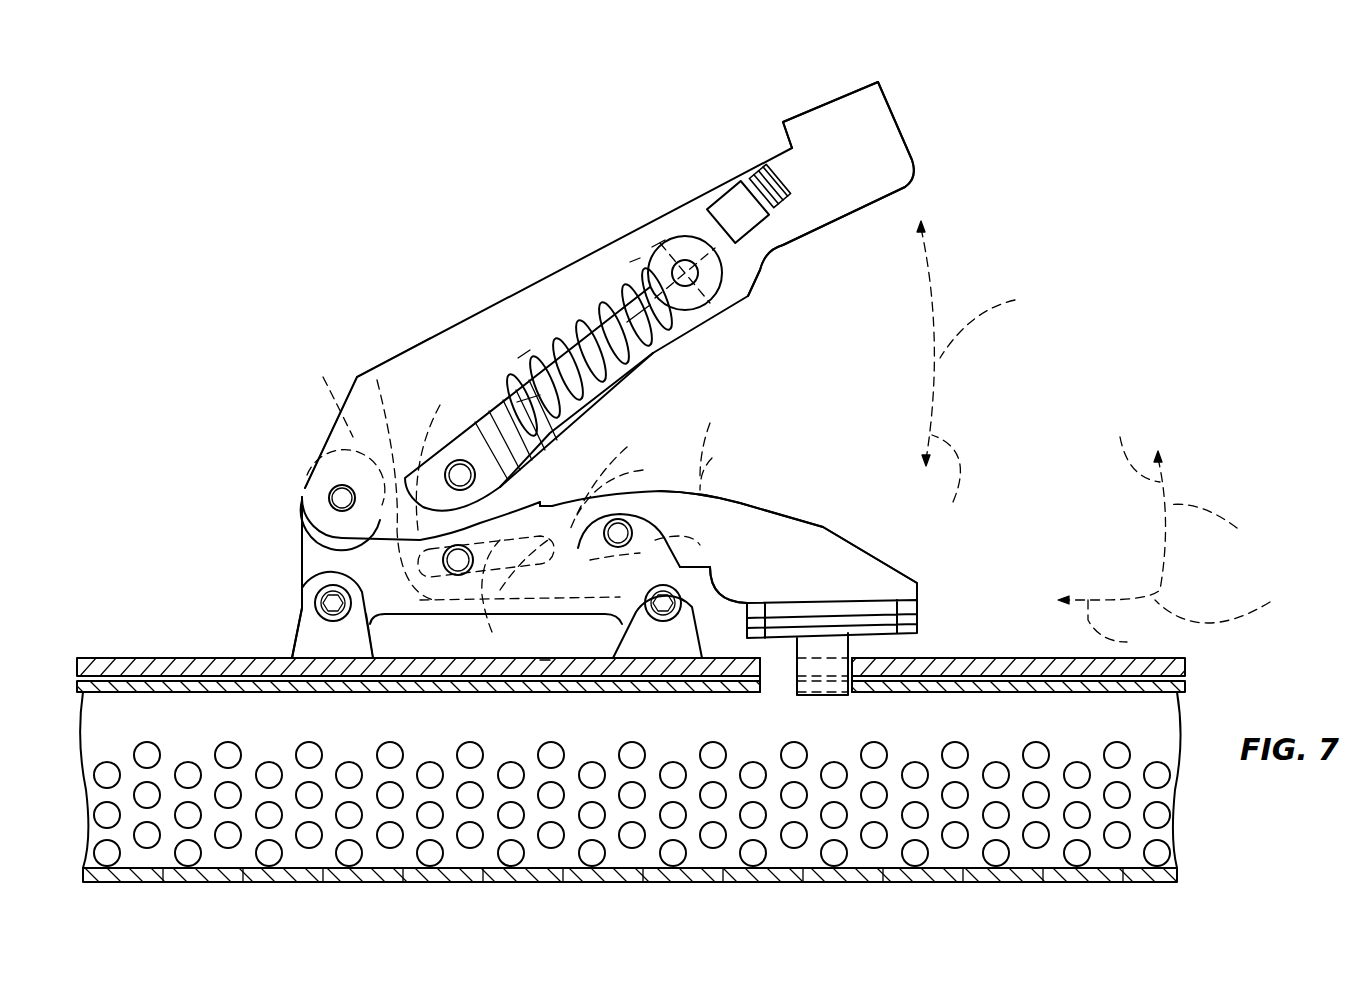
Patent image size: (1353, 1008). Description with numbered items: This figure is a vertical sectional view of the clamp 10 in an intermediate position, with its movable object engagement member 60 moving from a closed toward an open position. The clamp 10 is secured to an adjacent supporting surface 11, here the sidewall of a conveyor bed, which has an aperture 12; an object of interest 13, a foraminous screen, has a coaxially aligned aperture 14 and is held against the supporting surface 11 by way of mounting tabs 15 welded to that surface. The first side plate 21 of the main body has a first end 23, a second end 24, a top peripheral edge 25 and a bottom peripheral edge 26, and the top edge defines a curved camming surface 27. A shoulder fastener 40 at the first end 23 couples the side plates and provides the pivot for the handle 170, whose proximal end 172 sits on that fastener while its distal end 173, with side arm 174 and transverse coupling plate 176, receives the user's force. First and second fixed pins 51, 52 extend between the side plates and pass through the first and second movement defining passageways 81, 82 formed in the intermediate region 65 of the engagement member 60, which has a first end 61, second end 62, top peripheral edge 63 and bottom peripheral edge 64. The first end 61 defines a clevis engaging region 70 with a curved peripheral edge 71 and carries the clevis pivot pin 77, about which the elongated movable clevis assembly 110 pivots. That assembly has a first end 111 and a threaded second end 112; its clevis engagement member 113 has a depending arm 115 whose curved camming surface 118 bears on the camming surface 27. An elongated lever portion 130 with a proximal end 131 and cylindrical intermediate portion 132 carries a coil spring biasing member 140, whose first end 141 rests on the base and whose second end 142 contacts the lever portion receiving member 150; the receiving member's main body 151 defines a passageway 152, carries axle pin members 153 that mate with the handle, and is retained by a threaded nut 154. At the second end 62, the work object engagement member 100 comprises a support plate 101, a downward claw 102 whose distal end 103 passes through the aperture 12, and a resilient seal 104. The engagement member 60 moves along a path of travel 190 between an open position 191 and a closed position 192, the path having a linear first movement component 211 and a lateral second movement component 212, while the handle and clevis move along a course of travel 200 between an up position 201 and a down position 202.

The clamp 10 is at (310, 168).
The adjacent supporting surface 11 is at (1180, 673).
The aperture 12 is at (822, 685).
The object of interest 13 is at (875, 692).
The coaxially aligned aperture 14 is at (763, 687).
The mounting tabs 15 is at (337, 648).
The first side plate 21 is at (310, 572).
The first end 23 is at (300, 556).
The second end 24 is at (647, 530).
The top peripheral edge 25 is at (553, 553).
The bottom peripheral edge 26 is at (520, 605).
The curved camming surface 27 is at (372, 538).
The shoulder fastener 40 is at (340, 493).
The first fixed pin 51 is at (457, 585).
The second fixed pin 52 is at (716, 572).
The movable object engagement member 60 is at (812, 505).
The first end 61 is at (326, 392).
The second end 62 is at (840, 530).
The top peripheral edge 63 is at (738, 496).
The bottom peripheral edge 64 is at (716, 578).
The intermediate region 65 is at (500, 670).
The clevis engaging region 70 is at (529, 371).
The curved peripheral edge 71 is at (533, 453).
The clevis pivot pin 77 is at (563, 497).
The first movement defining passageway 81 is at (430, 605).
The second movement defining passageway 82 is at (618, 608).
The work object engagement member 100 is at (895, 630).
The support plate 101 is at (887, 605).
The claw 102 is at (828, 688).
The distal end 103 is at (808, 690).
The resilient seal 104 is at (837, 620).
The elongated movable clevis assembly 110 is at (520, 355).
The first end 111 is at (400, 430).
The second end 112 is at (803, 153).
The clevis engagement member 113 is at (503, 383).
The first depending arm 115 is at (410, 395).
The curved camming surface 118 is at (397, 552).
The elongated lever portion 130 is at (610, 320).
The proximal end 131 is at (517, 402).
The cylindrically shaped intermediate portion 132 is at (627, 322).
The biasing member 140 is at (574, 302).
The first end 141 is at (518, 358).
The second end 142 is at (630, 262).
The lever portion receiving member 150 is at (723, 234).
The main body 151 is at (652, 247).
The passageway 152 is at (745, 312).
The axle pin members 153 is at (687, 278).
The threaded nut 154 is at (718, 183).
The movable handle 170 is at (517, 208).
The proximal end 172 is at (330, 428).
The distal end 173 is at (898, 124).
The first side arm 174 is at (807, 200).
The coupling plate 176 is at (850, 105).
The path of travel 190 is at (1168, 540).
The first open position 191 is at (1131, 445).
The second closed position 192 is at (1129, 625).
The course of travel 200 is at (996, 319).
The first open or up position 201 is at (928, 235).
The second closed or down position 202 is at (948, 483).
The first movement component 211 is at (601, 536).
The second movement component 212 is at (626, 488).